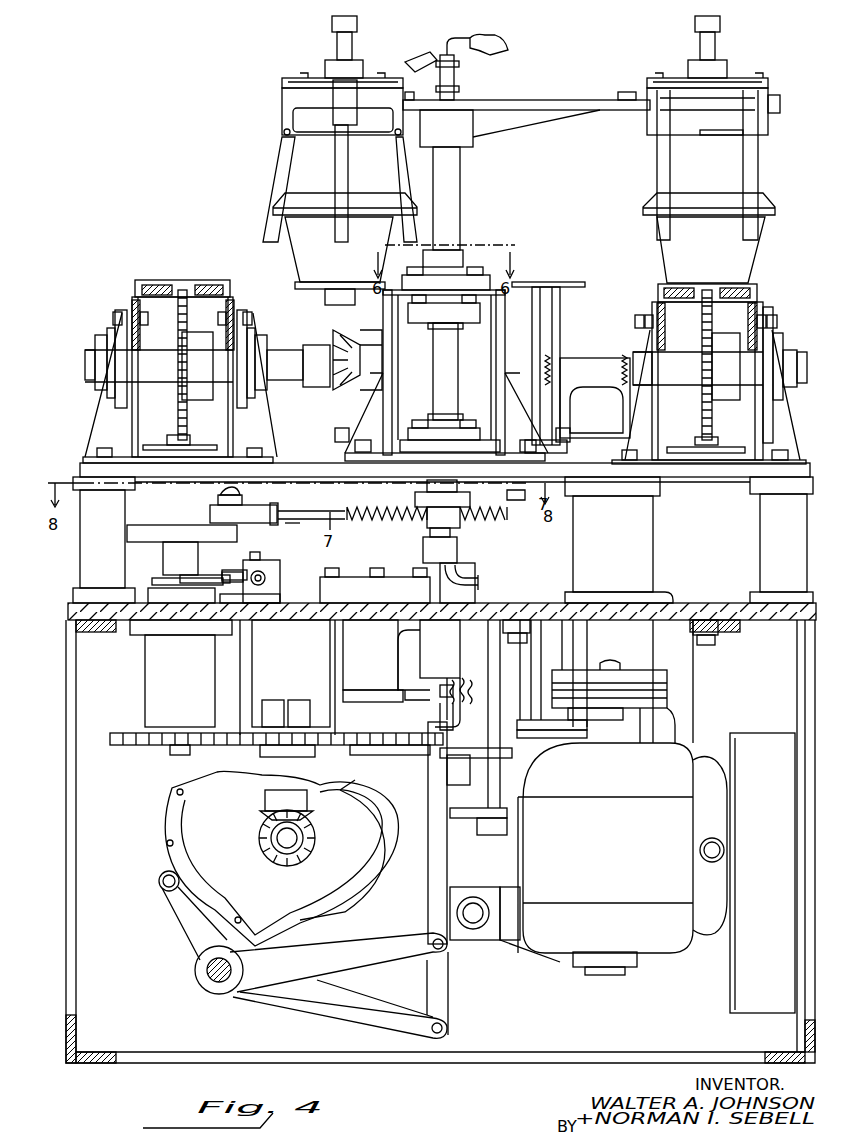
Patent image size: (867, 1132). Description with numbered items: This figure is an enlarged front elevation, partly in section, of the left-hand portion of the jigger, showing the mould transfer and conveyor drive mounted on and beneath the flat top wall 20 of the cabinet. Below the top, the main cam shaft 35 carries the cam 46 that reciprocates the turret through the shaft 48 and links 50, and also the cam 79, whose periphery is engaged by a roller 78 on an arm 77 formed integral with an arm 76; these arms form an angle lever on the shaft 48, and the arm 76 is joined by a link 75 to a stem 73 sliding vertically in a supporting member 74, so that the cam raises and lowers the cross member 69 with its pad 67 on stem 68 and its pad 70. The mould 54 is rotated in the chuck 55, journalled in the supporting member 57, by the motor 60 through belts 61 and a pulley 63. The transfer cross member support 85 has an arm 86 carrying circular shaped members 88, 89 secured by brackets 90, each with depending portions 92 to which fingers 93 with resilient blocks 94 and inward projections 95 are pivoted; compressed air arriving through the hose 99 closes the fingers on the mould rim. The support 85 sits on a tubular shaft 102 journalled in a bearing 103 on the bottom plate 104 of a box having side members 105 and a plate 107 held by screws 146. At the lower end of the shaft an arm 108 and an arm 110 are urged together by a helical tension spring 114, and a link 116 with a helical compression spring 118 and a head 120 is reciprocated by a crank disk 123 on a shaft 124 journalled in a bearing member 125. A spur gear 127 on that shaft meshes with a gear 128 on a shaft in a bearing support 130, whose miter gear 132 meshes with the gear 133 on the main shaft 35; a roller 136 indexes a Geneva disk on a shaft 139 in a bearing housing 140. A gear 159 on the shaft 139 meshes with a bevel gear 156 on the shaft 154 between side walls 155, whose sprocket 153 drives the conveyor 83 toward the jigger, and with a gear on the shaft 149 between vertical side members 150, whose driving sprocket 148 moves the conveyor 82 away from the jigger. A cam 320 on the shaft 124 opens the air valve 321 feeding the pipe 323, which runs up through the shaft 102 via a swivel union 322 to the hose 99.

The flat top wall 20 is at (508, 613).
The main cam shaft 35 is at (270, 848).
The cam 46 is at (342, 850).
The shaft 48 is at (205, 980).
The links 50 is at (442, 986).
The mould 54 is at (525, 250).
The chuck 55 is at (595, 398).
The supporting member 57 is at (619, 540).
The motor 60 is at (613, 859).
The belts 61 is at (660, 668).
The pulley 63 is at (580, 668).
The pad or mould support 67 is at (570, 282).
The stem 68 is at (560, 326).
The cross member 69 is at (335, 436).
The pad 70 is at (310, 290).
The stem 73 is at (455, 700).
The supporting member 74 is at (455, 596).
The link 75 is at (440, 860).
The arm 76 is at (338, 985).
The arm 77 is at (182, 940).
The roller 78 is at (158, 884).
The cam 79 is at (281, 858).
The conveyor 82 is at (695, 283).
The conveyor 83 is at (185, 280).
The cross member support 85 is at (470, 112).
The arm 86 is at (560, 100).
The circular shaped member 88 is at (778, 102).
The circular shaped member 89 is at (282, 100).
The bracket 90 is at (408, 97).
The depending portions 92 is at (290, 125).
The fingers 93 is at (275, 160).
The blocks 94 is at (298, 203).
The projections 95 is at (333, 135).
The hose 99 is at (425, 58).
The tubular shaft 102 is at (460, 192).
The bearing 103 is at (472, 428).
The bottom plate 104 is at (390, 428).
The side members 105 is at (392, 385).
The plate 107 is at (495, 285).
The arm 108 is at (530, 472).
The arm 110 is at (442, 504).
The helical tension spring 114 is at (492, 520).
The link 116 is at (295, 523).
The helical compression spring 118 is at (388, 522).
The head 120 is at (250, 515).
The crank disk 123 is at (155, 535).
The shaft 124 is at (165, 572).
The bearing member 125 is at (181, 673).
The spur gear 127 is at (118, 737).
The gear 128 is at (270, 733).
The bearing support 130 is at (287, 677).
The miter gear 132 is at (262, 812).
The gear 133 is at (258, 838).
The roller 136 is at (295, 733).
The shaft 139 is at (375, 365).
The bearing housing 140 is at (373, 661).
The screws 146 is at (478, 262).
The driving sprocket 148 is at (710, 408).
The shaft 149 is at (656, 383).
The vertical side members 150 is at (652, 425).
The sprocket 153 is at (178, 410).
The shaft 154 is at (178, 380).
The side walls 155 is at (230, 418).
The bevel gear 156 is at (325, 395).
The gear 159 is at (335, 340).
The cam 320 is at (215, 580).
The air valve 321 is at (275, 562).
The swivel union 322 is at (458, 560).
The pipe 323 is at (458, 92).